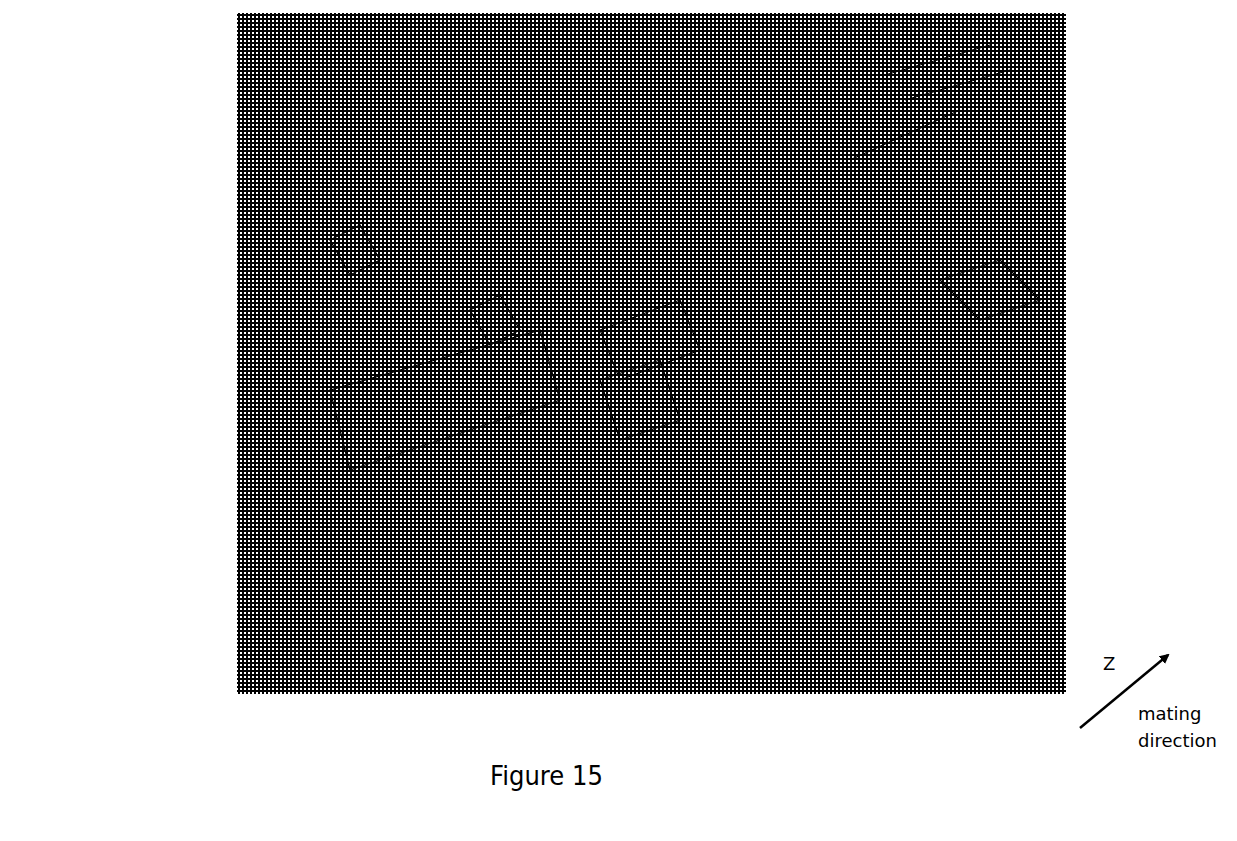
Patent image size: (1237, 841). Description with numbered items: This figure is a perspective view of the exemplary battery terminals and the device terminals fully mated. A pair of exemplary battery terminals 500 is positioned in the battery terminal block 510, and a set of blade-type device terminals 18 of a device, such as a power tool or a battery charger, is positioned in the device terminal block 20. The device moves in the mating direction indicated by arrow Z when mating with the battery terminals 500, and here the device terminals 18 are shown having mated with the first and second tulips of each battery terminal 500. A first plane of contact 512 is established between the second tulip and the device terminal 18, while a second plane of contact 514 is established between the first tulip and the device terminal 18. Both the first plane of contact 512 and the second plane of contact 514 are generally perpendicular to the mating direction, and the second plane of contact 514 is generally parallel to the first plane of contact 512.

The device terminal 18 is at (345, 237).
The device terminal block 20 is at (530, 433).
The battery terminal 500 is at (990, 103).
The battery terminal block 510 is at (973, 303).
The first plane of contact 512 is at (645, 425).
The second plane of contact 514 is at (640, 405).